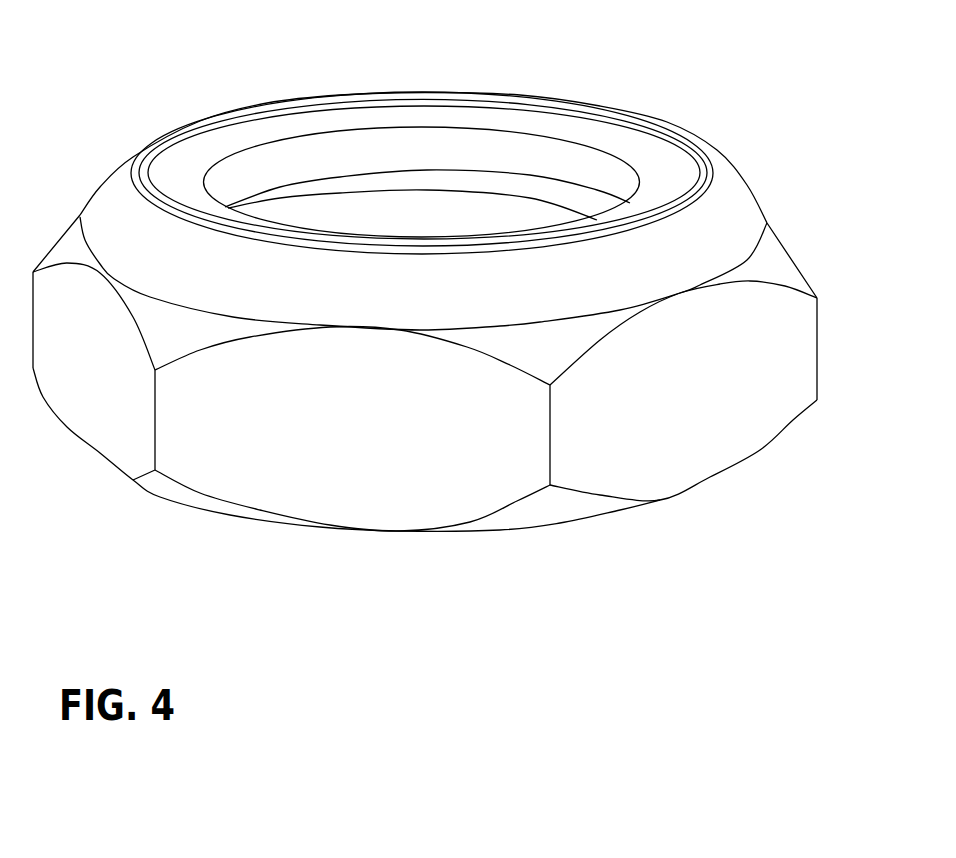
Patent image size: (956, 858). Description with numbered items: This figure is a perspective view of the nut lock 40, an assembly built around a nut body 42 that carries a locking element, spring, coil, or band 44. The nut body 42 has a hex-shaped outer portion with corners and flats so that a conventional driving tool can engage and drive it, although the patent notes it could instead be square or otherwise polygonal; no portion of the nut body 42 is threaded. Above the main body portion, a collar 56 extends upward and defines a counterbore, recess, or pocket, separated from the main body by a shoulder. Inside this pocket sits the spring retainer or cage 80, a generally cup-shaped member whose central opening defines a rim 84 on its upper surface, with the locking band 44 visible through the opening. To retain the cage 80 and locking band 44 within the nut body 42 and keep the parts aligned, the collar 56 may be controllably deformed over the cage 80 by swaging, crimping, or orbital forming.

The nut lock 40 is at (132, 40).
The nut body 42 is at (818, 369).
The locking band 44 is at (522, 160).
The collar 56 is at (728, 192).
The cage 80 is at (375, 113).
The rim 84 is at (205, 152).